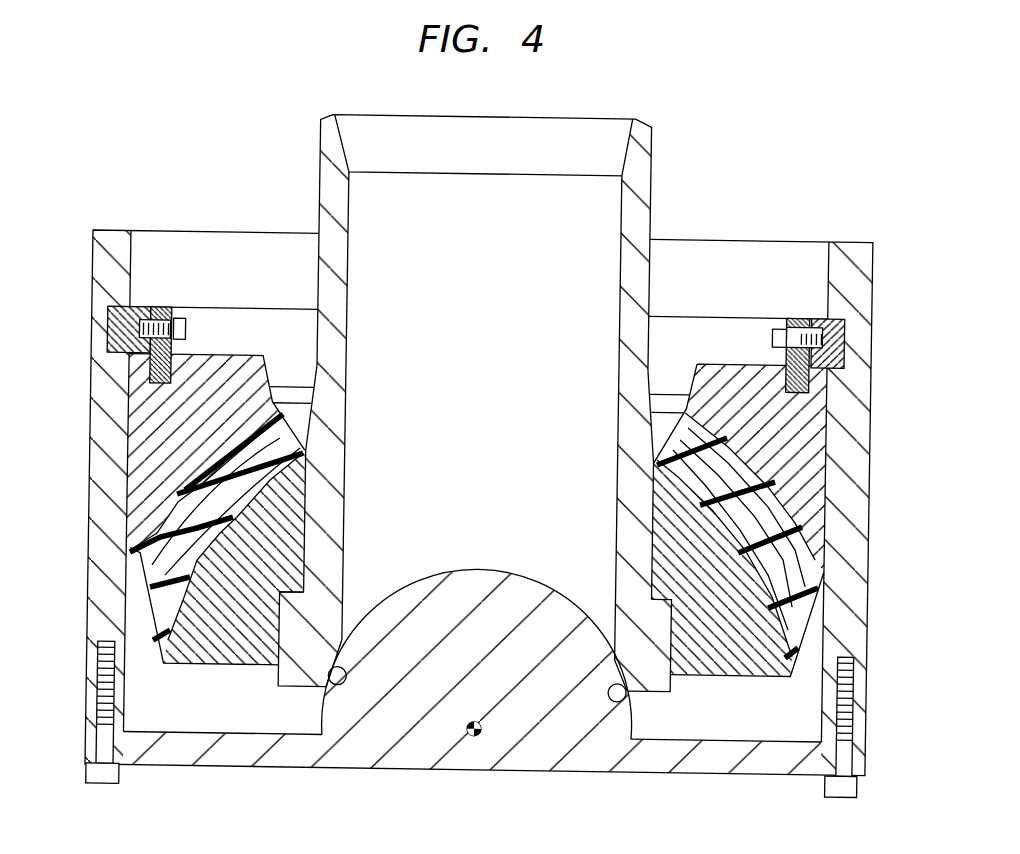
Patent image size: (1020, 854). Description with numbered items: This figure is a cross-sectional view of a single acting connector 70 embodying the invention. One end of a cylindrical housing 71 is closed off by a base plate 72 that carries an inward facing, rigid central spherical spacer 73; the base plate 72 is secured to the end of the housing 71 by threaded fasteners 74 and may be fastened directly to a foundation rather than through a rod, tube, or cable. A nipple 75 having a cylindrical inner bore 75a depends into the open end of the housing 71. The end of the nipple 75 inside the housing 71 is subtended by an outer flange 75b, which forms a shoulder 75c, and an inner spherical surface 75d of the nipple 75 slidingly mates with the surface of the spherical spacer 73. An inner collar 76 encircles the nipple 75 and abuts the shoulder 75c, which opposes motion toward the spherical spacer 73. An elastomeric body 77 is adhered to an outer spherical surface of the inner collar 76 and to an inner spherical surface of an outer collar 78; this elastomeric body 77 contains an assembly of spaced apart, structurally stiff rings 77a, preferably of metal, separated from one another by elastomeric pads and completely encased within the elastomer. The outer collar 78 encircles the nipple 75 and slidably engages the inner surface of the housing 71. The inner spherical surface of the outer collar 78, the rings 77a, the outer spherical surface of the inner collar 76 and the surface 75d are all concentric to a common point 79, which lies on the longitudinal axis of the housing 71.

The single acting connector 70 is at (882, 214).
The cylindrical housing 71 is at (866, 565).
The base plate 72 is at (741, 751).
The spherical spacer 73 is at (512, 597).
The threaded fasteners 74 is at (113, 784).
The nipple 75 is at (647, 170).
The cylindrical inner bore 75a is at (381, 285).
The outer flange 75b is at (313, 654).
The shoulder 75c is at (303, 597).
The inner spherical surface 75d is at (339, 667).
The inner collar 76 is at (252, 609).
The elastomeric body 77 is at (150, 604).
The rings 77a is at (176, 521).
The outer collar 78 is at (196, 432).
The common point 79 is at (123, 325).